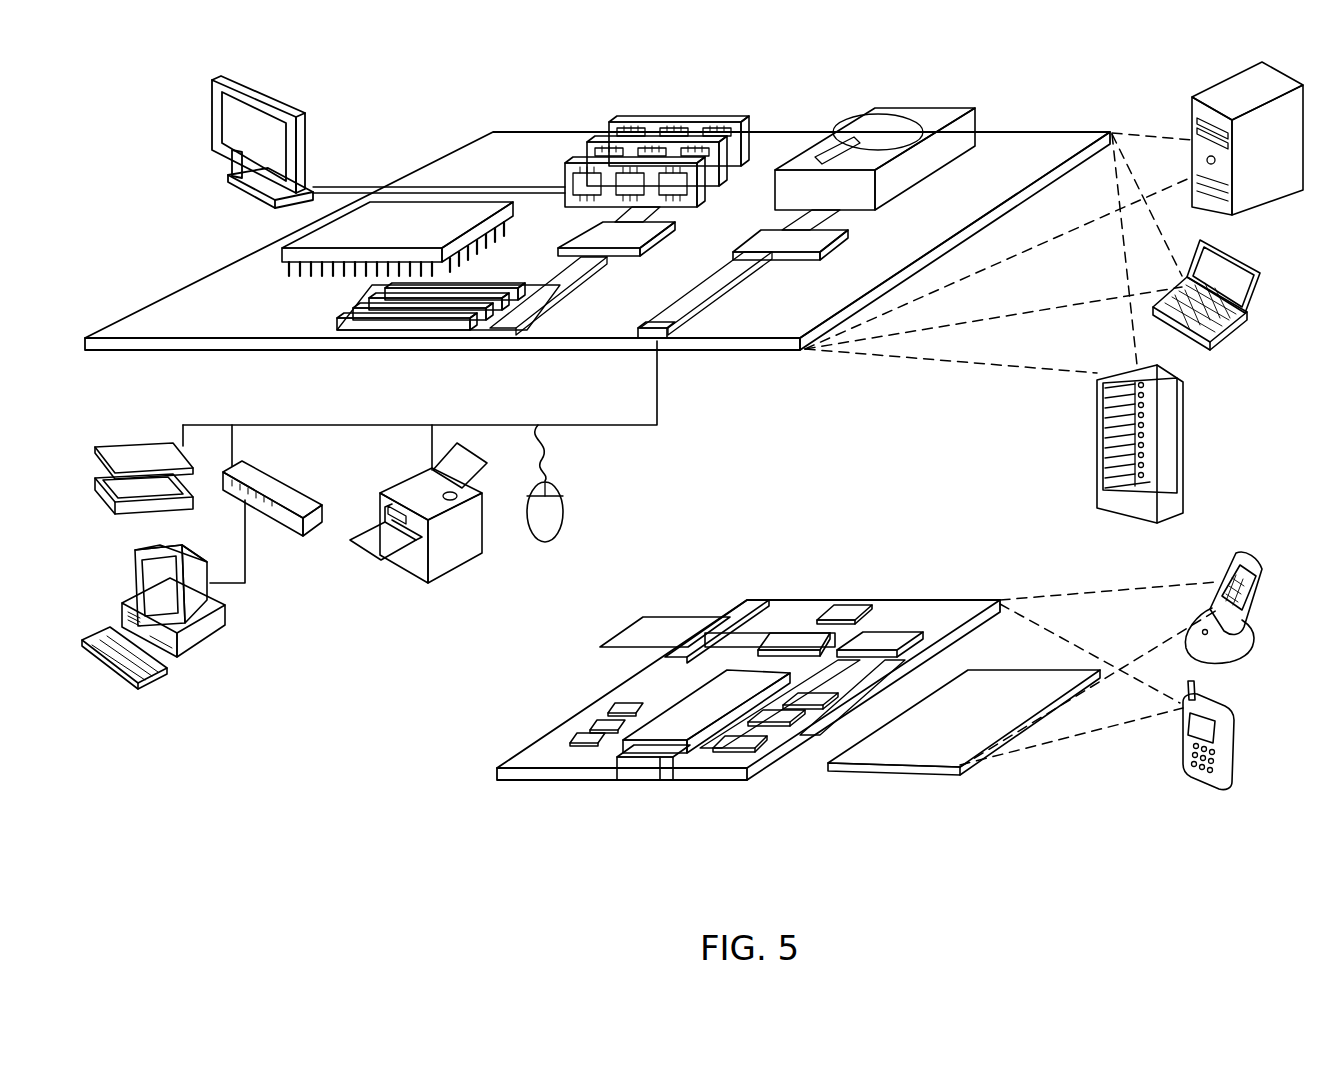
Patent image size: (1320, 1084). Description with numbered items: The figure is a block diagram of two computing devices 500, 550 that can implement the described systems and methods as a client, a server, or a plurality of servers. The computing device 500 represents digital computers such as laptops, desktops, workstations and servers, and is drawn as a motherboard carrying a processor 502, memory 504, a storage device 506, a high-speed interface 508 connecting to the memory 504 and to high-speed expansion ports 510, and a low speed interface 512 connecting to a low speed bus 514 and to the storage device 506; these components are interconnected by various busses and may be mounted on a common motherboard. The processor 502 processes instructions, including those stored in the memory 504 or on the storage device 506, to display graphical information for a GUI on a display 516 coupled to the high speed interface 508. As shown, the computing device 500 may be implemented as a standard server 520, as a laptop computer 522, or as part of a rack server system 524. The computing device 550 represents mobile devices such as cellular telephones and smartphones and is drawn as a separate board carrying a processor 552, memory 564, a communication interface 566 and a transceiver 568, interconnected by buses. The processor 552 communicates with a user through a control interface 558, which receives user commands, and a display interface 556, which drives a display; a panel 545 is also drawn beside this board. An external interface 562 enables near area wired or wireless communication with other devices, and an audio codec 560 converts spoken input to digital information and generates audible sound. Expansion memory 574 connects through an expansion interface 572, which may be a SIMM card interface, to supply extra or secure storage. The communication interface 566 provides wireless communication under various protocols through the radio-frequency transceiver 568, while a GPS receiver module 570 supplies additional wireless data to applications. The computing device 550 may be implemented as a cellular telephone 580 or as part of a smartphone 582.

The computing device 500 is at (417, 102).
The processor 502 is at (282, 250).
The memory 504 is at (616, 123).
The storage device 506 is at (860, 130).
The high-speed interface 508 is at (590, 235).
The high-speed expansion ports 510 is at (360, 310).
The low speed interface 512 is at (770, 234).
The low speed bus 514 is at (664, 342).
The display 516 is at (210, 72).
The standard server 520 is at (1192, 115).
The laptop computer 522 is at (1262, 273).
The rack server system 524 is at (1097, 472).
The display panel 545 is at (922, 753).
The computing device 550 is at (468, 782).
The processor 552 is at (680, 734).
The display interface 556 is at (750, 742).
The control interface 558 is at (782, 718).
The audio codec 560 is at (808, 697).
The external interface 562 is at (643, 767).
The memory 564 is at (603, 727).
The communication interface 566 is at (792, 640).
The transceiver 568 is at (883, 640).
The GPS receiver module 570 is at (847, 604).
The expansion interface 572 is at (728, 617).
The expansion memory 574 is at (641, 616).
The cellular telephone 580 is at (1224, 557).
The smartphone 582 is at (1180, 740).